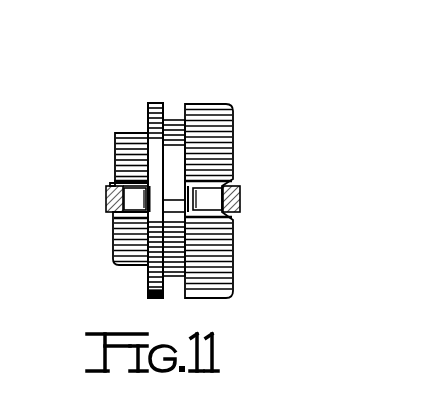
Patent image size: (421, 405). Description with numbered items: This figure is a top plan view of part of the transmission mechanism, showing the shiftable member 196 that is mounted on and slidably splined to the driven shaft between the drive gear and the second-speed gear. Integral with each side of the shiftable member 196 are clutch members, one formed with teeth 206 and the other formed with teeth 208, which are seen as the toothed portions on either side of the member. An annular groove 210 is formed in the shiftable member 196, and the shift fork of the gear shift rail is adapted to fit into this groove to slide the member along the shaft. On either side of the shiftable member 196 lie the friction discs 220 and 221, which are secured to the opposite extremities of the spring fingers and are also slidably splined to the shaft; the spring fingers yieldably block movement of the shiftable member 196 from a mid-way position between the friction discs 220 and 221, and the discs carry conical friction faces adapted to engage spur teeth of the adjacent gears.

The shiftable member 196 is at (198, 104).
The teeth 206 is at (222, 146).
The teeth 208 is at (125, 138).
The annular groove 210 is at (173, 119).
The friction disc 220 is at (240, 195).
The friction disc 221 is at (105, 196).